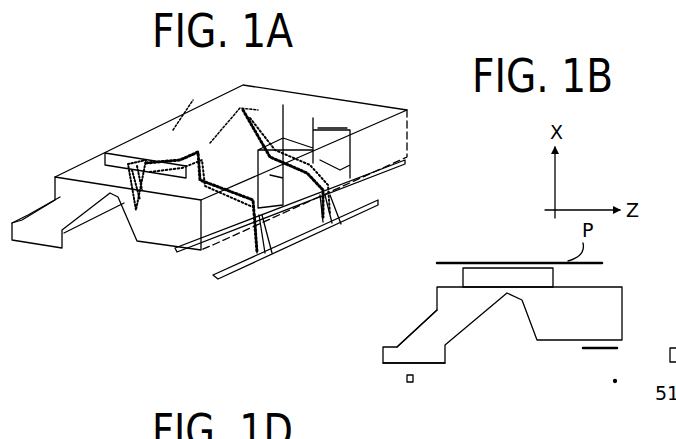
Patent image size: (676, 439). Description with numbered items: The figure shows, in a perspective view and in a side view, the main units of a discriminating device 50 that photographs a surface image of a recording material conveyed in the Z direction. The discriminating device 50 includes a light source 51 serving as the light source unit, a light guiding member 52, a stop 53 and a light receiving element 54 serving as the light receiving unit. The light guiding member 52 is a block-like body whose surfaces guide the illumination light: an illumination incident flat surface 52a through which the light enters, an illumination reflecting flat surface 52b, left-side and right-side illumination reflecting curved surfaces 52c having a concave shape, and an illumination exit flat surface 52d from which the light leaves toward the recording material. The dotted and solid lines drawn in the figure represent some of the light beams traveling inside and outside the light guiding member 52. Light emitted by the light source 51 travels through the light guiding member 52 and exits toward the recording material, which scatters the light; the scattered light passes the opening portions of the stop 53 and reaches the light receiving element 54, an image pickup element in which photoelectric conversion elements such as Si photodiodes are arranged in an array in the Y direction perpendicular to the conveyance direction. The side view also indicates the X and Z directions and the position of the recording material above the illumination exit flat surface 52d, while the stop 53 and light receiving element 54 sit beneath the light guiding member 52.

In FIG. 1A, the discriminating device 50 is at (126, 125).
In FIG. 1B, the discriminating device 50 is at (502, 236).
In FIG. 1B, the light source 51 is at (403, 379).
In FIG. 1A, the light guiding member 52 is at (78, 166).
In FIG. 1B, the light guiding member 52 is at (437, 284).
In FIG. 1B, the illumination incident flat surface 52a is at (430, 364).
In FIG. 1B, the illumination reflecting flat surface 52b is at (398, 338).
In FIG. 1B, the illumination reflecting curved surface 52c is at (675, 340).
In FIG. 1B, the illumination exit flat surface 52d is at (473, 262).
In FIG. 1A, the stop 53 is at (362, 178).
In FIG. 1B, the stop 53 is at (606, 350).
In FIG. 1A, the light receiving element 54 is at (342, 218).
In FIG. 1B, the light receiving element 54 is at (613, 382).